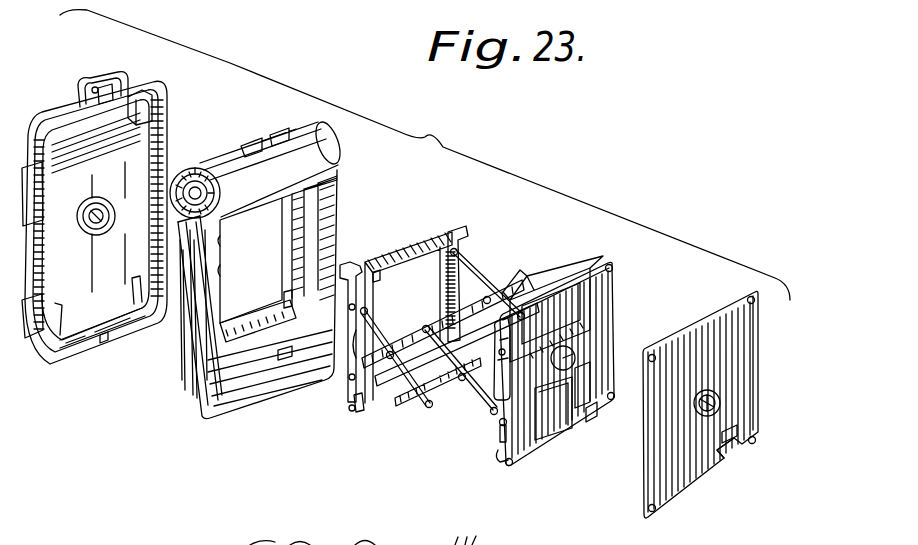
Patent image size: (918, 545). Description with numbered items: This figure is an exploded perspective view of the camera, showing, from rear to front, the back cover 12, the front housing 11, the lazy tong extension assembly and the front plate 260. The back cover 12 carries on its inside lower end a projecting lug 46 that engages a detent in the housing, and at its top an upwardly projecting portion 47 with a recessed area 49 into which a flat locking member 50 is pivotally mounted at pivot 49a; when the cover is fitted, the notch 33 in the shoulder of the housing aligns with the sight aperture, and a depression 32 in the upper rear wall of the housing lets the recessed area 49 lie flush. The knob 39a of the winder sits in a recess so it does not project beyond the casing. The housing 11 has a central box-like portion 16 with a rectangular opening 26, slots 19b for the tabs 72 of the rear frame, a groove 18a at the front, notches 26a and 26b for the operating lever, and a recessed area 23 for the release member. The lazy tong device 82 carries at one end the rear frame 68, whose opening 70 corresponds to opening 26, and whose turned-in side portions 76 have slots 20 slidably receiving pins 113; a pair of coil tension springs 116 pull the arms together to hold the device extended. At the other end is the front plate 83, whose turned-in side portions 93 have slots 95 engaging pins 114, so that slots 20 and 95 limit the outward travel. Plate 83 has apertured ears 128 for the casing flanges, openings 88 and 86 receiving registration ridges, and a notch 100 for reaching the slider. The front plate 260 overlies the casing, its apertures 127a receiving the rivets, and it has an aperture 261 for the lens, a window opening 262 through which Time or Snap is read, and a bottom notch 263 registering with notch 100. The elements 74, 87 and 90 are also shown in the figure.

The front housing 11 is at (233, 422).
The back cover 12 is at (50, 368).
The box-like portion 16 is at (186, 322).
The groove 18a is at (285, 362).
The slots 19b is at (283, 300).
The slots 20 is at (357, 414).
The recessed area 23 is at (336, 166).
The opening 26 is at (200, 356).
The notch 26a is at (222, 241).
The notch 26b is at (222, 271).
The depression 32 is at (249, 142).
The notch 33 is at (278, 133).
The knob 39a is at (193, 170).
The projecting lug 46 is at (108, 345).
The upwardly projecting portion 47 is at (108, 80).
The recessed area 49 is at (136, 92).
The pivot 49a is at (85, 80).
The locking member 50 is at (95, 85).
The rear frame 68 is at (385, 400).
The opening 70 is at (413, 282).
The tabs 72 is at (352, 265).
The spring 74 is at (376, 278).
The turned-in side portions 76 is at (352, 382).
The lazy tong device 82 is at (416, 414).
The front frame or plate 83 is at (607, 313).
The opening 86 is at (553, 416).
The window opening 87 is at (588, 384).
The opening 88 is at (565, 302).
The link arm 90 is at (486, 398).
The turned-in side portions 93 is at (500, 412).
The slots 95 is at (503, 462).
The notch 100 is at (588, 418).
The pins 113 is at (350, 411).
The pins 114 is at (500, 438).
The coil tension springs 116 is at (470, 270).
The apertures 127a is at (753, 301).
The apertured ears 128 is at (613, 269).
The front plate 260 is at (650, 476).
The aperture 261 is at (712, 392).
The window opening 262 is at (738, 430).
The notch 263 is at (733, 460).